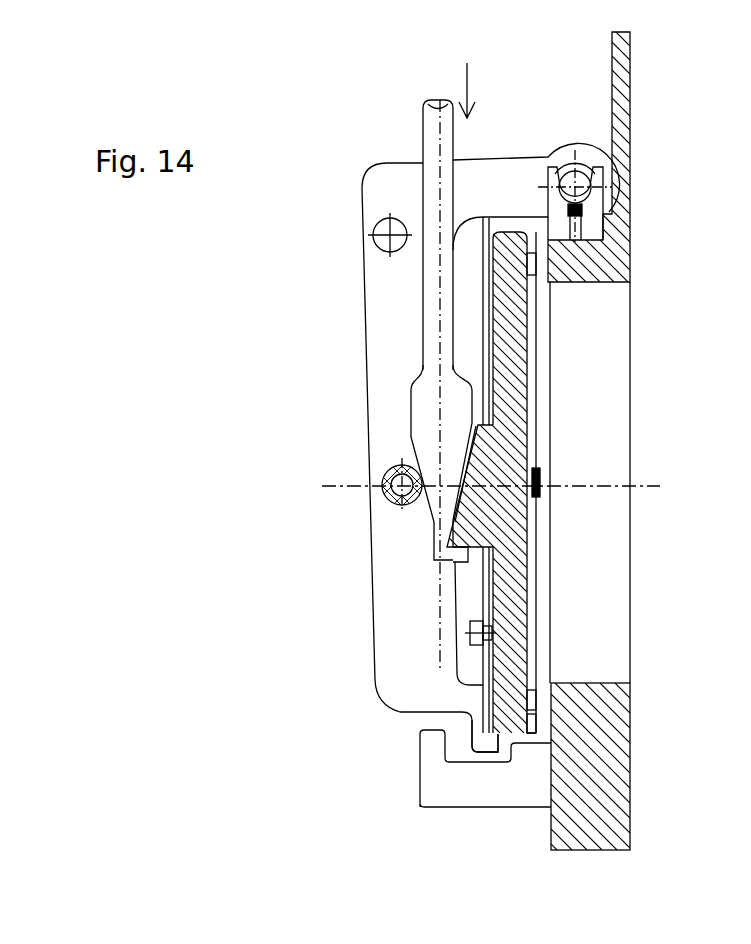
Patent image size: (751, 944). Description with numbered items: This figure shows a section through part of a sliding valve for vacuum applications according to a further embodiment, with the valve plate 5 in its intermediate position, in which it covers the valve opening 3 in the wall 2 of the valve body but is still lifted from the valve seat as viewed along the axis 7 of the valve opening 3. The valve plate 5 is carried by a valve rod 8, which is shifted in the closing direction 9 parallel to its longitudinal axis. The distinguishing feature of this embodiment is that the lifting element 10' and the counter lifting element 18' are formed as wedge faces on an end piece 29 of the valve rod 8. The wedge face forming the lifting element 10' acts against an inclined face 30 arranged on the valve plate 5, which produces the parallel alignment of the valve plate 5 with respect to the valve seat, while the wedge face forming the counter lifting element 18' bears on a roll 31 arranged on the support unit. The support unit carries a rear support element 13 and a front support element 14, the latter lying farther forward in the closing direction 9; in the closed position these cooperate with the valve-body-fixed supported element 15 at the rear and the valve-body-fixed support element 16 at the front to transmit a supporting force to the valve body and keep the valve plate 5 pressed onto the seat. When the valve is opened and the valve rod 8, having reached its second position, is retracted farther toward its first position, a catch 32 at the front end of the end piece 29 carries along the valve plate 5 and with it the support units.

The wall 2 is at (590, 755).
The valve opening 3 is at (605, 628).
The valve plate 5 is at (507, 372).
The axis 7 is at (610, 490).
The valve rod 8 is at (428, 145).
The closing direction 9 is at (465, 80).
The lifting element 10' is at (593, 521).
The rear support element 13 is at (587, 182).
The front support element 14 is at (487, 749).
The valve-body-fixed supported element 15 is at (550, 180).
The valve-body-fixed support element 16 is at (430, 744).
The counter lifting element 18' is at (384, 547).
The end piece 29 is at (418, 398).
The inclined face 30 is at (460, 450).
The roll 31 is at (385, 490).
The catch 32 is at (452, 557).